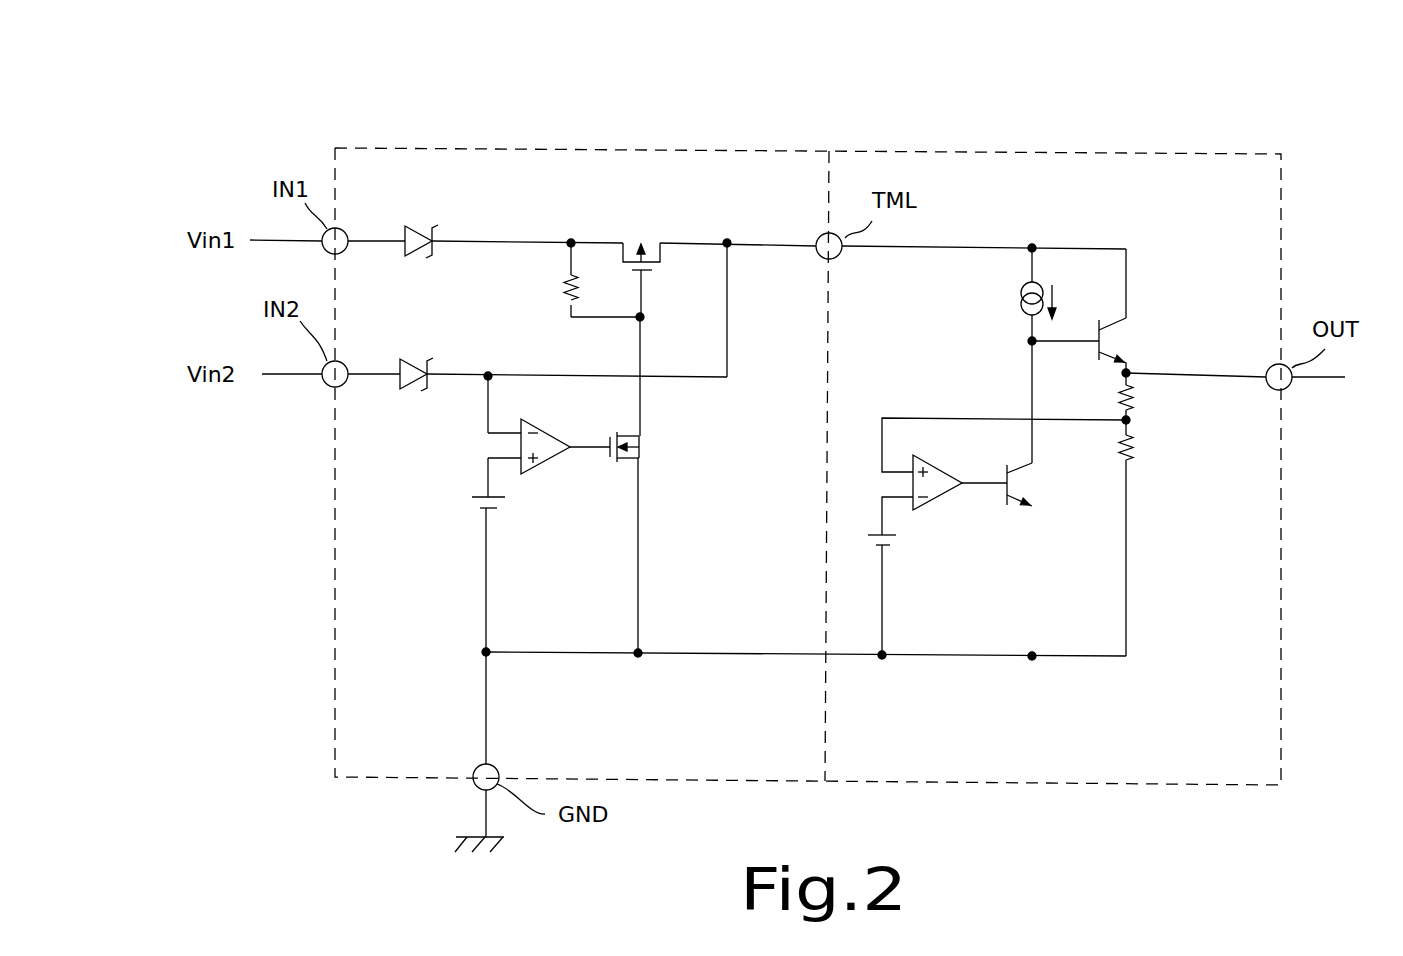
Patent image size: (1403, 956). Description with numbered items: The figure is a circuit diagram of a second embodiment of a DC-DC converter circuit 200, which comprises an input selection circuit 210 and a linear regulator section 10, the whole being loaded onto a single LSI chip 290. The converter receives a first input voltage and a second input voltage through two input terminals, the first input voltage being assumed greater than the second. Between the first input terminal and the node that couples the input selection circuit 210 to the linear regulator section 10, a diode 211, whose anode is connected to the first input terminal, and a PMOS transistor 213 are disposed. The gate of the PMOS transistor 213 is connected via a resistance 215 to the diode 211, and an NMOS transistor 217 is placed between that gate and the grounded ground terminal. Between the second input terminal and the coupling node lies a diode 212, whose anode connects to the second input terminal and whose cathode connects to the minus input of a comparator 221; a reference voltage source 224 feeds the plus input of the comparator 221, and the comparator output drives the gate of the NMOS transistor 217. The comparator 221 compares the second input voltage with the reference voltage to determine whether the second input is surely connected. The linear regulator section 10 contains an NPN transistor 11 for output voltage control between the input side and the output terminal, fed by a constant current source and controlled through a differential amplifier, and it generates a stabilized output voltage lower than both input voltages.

The DC-DC converter circuit 200 is at (1237, 138).
The LSI chip 290 is at (1040, 152).
The input selection circuit 210 is at (697, 226).
The diode 211 is at (405, 234).
The diode 212 is at (400, 368).
The PMOS transistor 213 is at (641, 243).
The resistance 215 is at (562, 293).
The NMOS transistor 217 is at (648, 442).
The comparator 221 is at (573, 417).
The reference voltage source 224 is at (512, 507).
The linear regulator section 10 is at (1217, 253).
The NPN transistor 11 is at (1120, 342).